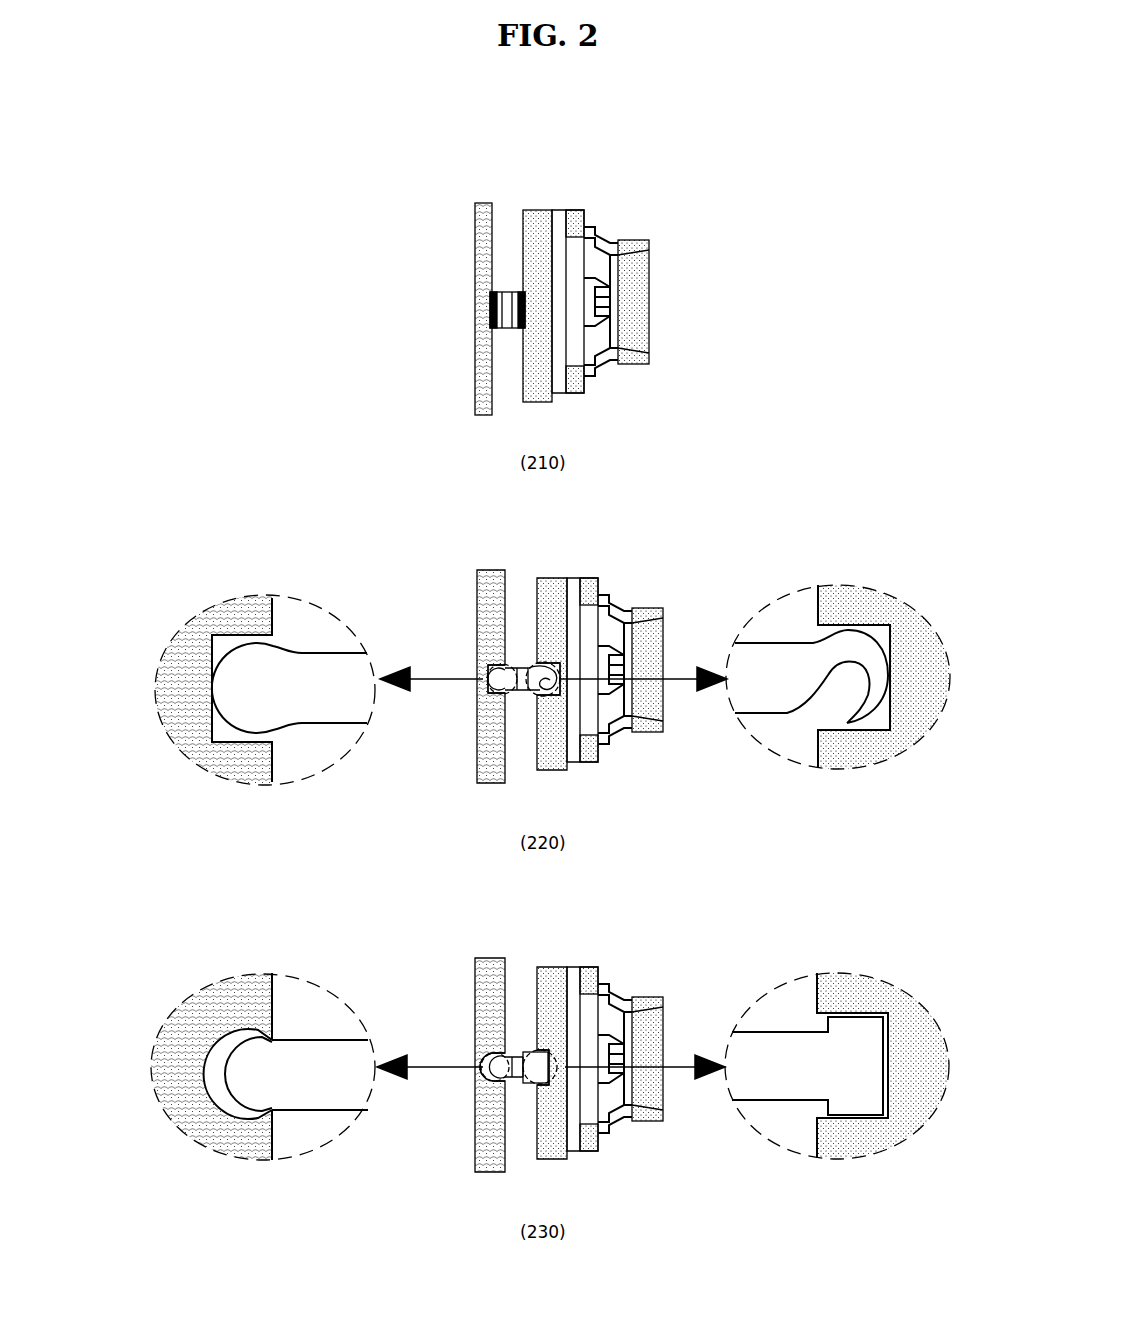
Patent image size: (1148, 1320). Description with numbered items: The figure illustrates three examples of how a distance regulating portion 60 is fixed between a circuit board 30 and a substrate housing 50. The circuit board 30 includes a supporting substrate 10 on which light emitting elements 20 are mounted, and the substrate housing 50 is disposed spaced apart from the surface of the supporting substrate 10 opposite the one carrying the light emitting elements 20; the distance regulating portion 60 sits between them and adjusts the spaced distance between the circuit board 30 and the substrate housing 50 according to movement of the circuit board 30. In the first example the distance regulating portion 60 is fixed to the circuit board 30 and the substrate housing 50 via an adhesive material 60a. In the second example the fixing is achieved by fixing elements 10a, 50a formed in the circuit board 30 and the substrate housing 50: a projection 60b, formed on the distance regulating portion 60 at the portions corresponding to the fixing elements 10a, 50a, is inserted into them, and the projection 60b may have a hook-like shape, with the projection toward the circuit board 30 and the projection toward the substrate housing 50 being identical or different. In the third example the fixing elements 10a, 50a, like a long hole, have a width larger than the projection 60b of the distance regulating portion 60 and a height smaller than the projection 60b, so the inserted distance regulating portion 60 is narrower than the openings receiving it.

The supporting substrate 10 is at (537, 218).
The fixing element 10a is at (562, 685).
The light emitting element 20 is at (635, 255).
The circuit board 30 is at (667, 160).
The substrate housing 50 is at (483, 203).
The fixing element 50a is at (490, 665).
The distance regulating portion 60 is at (517, 693).
The adhesive material 60a is at (522, 330).
The projection 60b is at (250, 650).